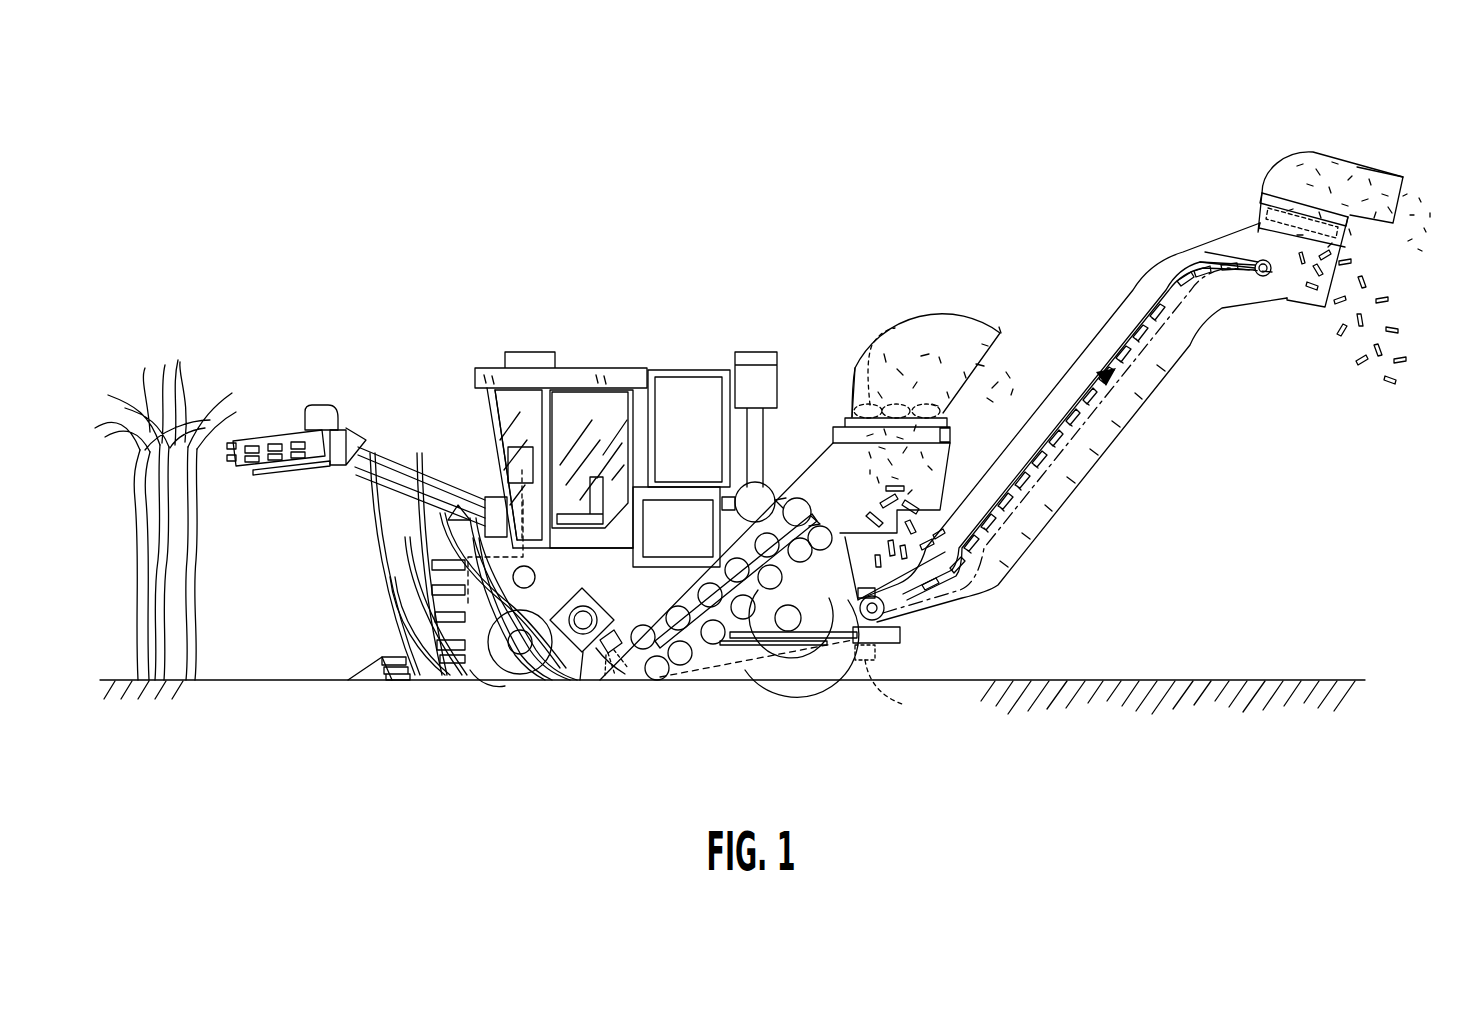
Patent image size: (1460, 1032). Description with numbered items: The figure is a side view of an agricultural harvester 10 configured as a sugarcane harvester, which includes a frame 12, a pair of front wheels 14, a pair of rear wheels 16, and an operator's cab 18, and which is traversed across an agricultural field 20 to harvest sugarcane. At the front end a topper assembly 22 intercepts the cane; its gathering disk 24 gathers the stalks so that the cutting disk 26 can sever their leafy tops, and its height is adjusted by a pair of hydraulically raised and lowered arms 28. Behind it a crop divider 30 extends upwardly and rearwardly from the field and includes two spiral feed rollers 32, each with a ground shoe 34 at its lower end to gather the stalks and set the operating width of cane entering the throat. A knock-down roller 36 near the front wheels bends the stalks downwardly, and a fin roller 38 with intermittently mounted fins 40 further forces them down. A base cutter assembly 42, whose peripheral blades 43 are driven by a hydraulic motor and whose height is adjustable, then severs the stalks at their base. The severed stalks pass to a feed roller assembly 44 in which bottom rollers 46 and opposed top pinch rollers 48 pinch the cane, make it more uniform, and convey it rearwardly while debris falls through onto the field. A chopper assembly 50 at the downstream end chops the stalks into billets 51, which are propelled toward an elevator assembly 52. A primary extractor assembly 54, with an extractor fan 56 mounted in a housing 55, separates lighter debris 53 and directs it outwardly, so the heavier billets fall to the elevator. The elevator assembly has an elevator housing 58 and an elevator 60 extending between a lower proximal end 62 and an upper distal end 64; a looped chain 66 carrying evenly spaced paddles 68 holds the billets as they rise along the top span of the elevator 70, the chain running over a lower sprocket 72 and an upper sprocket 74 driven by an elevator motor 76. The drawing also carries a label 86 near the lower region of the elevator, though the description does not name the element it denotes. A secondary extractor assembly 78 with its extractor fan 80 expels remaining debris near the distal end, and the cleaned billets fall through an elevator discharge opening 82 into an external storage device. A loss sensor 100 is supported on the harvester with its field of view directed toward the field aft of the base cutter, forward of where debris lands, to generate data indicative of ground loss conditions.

The agricultural harvester 10 is at (441, 270).
The frame 12 is at (600, 583).
The front wheels 14 is at (505, 685).
The rear wheels 16 is at (808, 665).
The operator's cab 18 is at (614, 370).
The agricultural field 20 is at (278, 685).
The topper assembly 22 is at (340, 412).
The gathering disk 24 is at (247, 437).
The cutting disk 26 is at (262, 476).
The arms 28 is at (478, 481).
The crop divider 30 is at (388, 646).
The spiral feed rollers 32 is at (395, 677).
The ground shoe 34 is at (375, 677).
The knock-down roller 36 is at (538, 585).
The fin roller 38 is at (584, 652).
The fins 40 is at (552, 662).
The base cutter assembly 42 is at (626, 672).
The blades 43 is at (613, 633).
The feed roller assembly 44 is at (708, 650).
The bottom rollers 46 is at (680, 665).
The top pinch rollers 48 is at (770, 533).
The chopper assembly 50 is at (806, 515).
The billets 51 is at (905, 512).
The elevator assembly 52 is at (1078, 484).
The debris 53 is at (949, 352).
The primary extractor assembly 54 is at (851, 298).
The housing 55 is at (918, 316).
The extractor fan 56 is at (866, 348).
The elevator housing 58 is at (1110, 442).
The elevator 60 is at (1096, 370).
The proximal end 62 is at (915, 629).
The distal end 64 is at (1257, 247).
The looped chain 66 is at (1125, 400).
The paddles 68 is at (1160, 305).
The top span of the elevator 70 is at (1056, 394).
The lower sprocket 72 is at (875, 652).
The upper sprocket 74 is at (1233, 277).
The elevator motor 76 is at (1253, 272).
The secondary extractor assembly 78 is at (1317, 152).
The extractor fan 80 is at (1280, 206).
The elevator discharge opening 82 is at (1287, 305).
The billet flow 86 is at (903, 545).
The loss sensors 100 is at (894, 697).